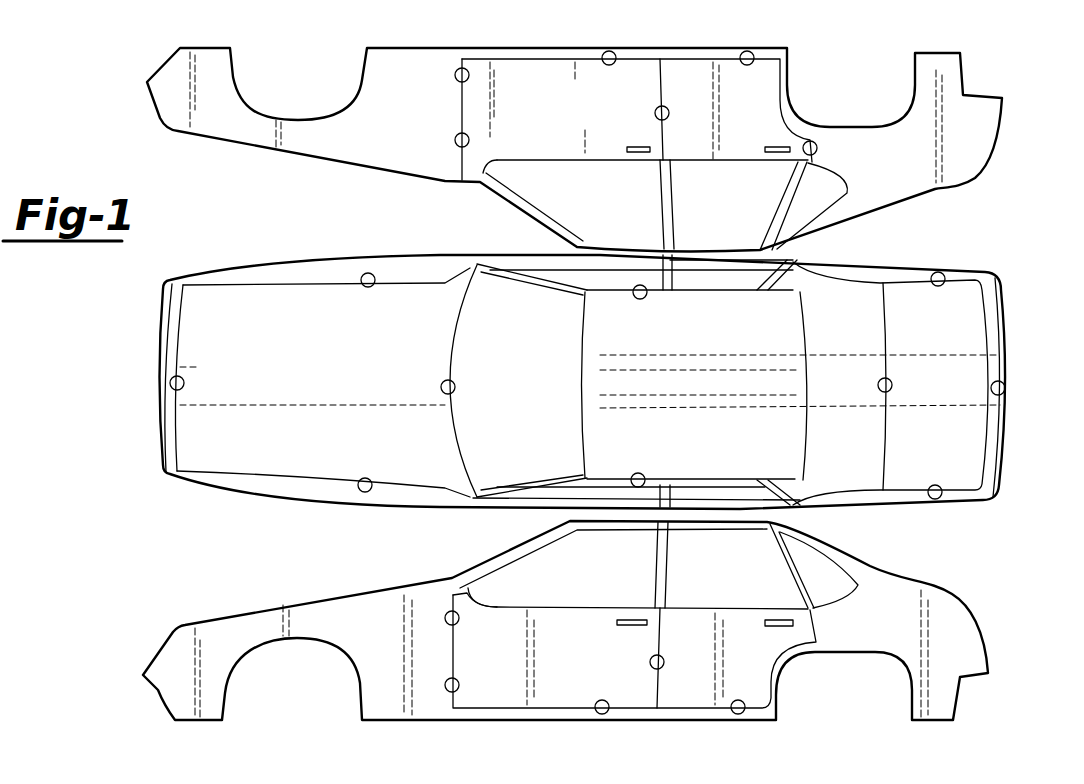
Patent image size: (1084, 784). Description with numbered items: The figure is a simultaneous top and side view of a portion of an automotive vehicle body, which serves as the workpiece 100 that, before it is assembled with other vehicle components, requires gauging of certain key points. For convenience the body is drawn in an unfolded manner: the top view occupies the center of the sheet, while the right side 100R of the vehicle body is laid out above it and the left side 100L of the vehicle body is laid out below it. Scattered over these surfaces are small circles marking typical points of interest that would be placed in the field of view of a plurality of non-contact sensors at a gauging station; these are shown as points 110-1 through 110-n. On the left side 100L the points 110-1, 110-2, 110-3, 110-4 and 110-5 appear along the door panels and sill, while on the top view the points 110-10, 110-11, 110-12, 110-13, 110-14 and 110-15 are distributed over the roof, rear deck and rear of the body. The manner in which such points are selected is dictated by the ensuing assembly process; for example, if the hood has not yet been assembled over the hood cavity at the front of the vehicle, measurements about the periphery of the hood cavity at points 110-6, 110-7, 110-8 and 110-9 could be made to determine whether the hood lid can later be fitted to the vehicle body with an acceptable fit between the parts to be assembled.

The workpiece 100 is at (141, 302).
The right side of the vehicle body 100R is at (266, 157).
The left side of the vehicle body 100L is at (180, 622).
The point of interest 110-1 is at (451, 626).
The point of interest 110-2 is at (451, 693).
The point of interest 110-3 is at (597, 714).
The point of interest 110-4 is at (654, 669).
The point of interest 110-5 is at (739, 715).
The point of interest 110-6 is at (360, 491).
The point of interest 110-7 is at (172, 390).
The point of interest 110-8 is at (367, 287).
The point of interest 110-9 is at (456, 388).
The point of interest 110-10 is at (640, 299).
The point of interest 110-11 is at (645, 476).
The point of interest 110-12 is at (889, 379).
The point of interest 110-13 is at (935, 499).
The point of interest 110-14 is at (1005, 384).
The point of interest 110-15 is at (940, 272).
The point of interest 110-n is at (752, 53).